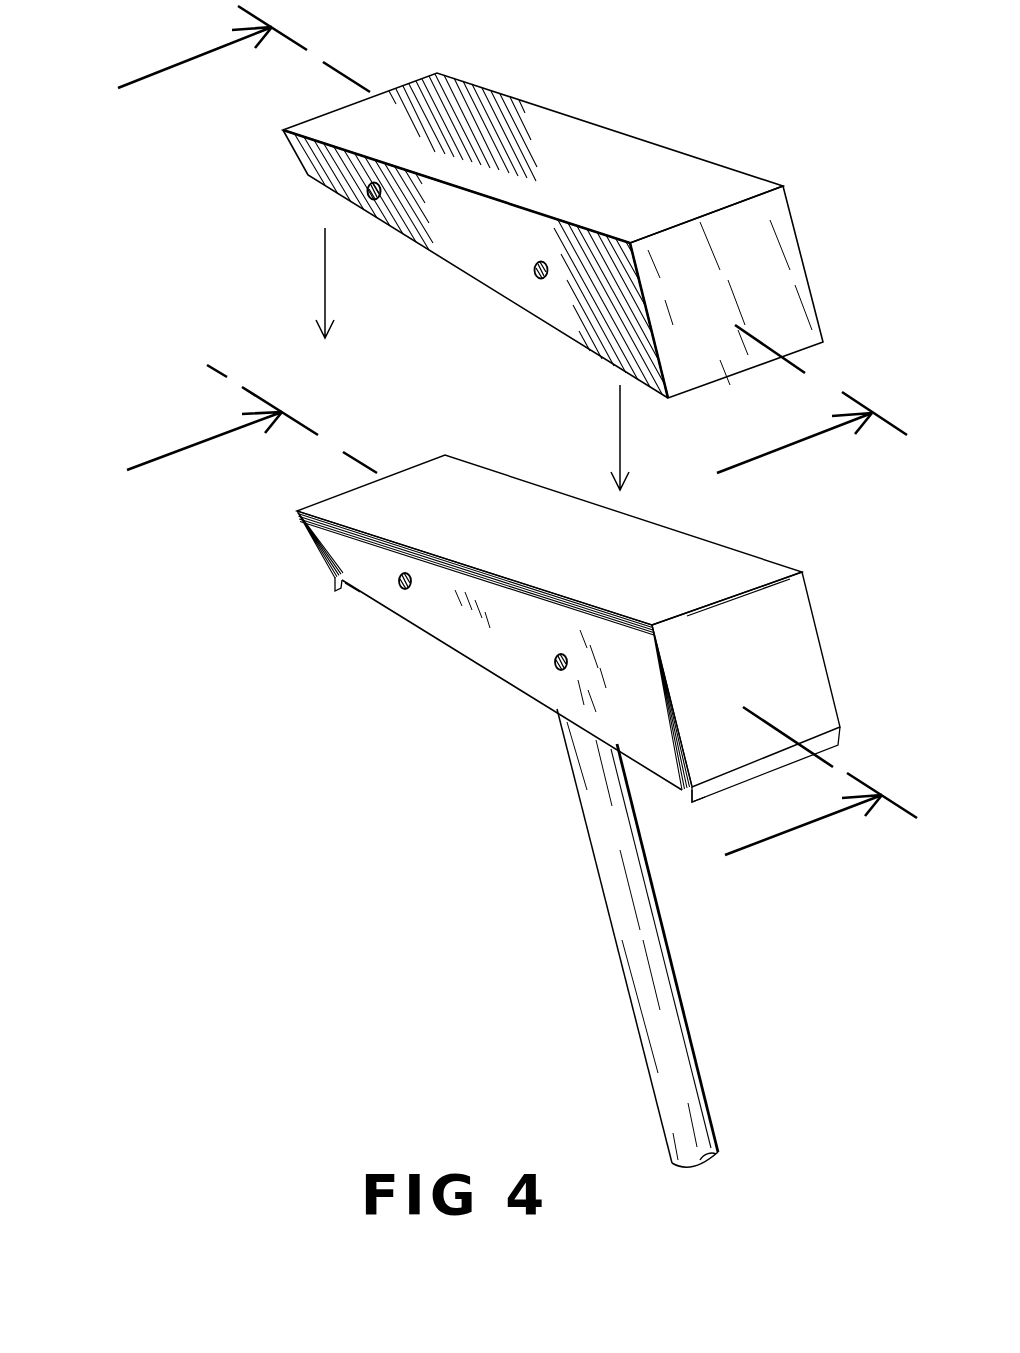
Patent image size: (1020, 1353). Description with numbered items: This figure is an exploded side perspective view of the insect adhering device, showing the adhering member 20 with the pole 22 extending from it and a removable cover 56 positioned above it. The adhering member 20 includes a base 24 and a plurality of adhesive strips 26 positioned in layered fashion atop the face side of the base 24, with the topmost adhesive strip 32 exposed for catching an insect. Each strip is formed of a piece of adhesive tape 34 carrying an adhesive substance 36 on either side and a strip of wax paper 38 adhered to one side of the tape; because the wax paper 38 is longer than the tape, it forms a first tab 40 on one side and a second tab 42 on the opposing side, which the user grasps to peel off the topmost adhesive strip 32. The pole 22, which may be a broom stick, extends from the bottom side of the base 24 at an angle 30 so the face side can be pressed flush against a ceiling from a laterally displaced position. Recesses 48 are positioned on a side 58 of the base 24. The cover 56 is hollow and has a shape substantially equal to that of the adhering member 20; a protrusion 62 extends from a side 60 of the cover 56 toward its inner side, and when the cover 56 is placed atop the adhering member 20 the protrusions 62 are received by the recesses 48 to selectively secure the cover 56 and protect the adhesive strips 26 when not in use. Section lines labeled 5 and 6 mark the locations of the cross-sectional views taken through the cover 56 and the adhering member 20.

The section line 5- 5 is at (496, 254).
The section line 6- 6 is at (509, 626).
The adhering member 20 is at (553, 791).
The pole 22 is at (635, 938).
The base 24 is at (472, 676).
The plurality of adhesive strips 26 is at (518, 592).
The angle 30 is at (633, 798).
The topmost adhesive strip 32 is at (494, 497).
The adhesive tape 34 is at (765, 579).
The adhesive substance 36 is at (717, 571).
The wax paper 38 is at (688, 794).
The first tab 40 is at (333, 580).
The second tab 42 is at (803, 756).
The recesses 48 is at (420, 651).
The cover 56 is at (553, 232).
The side of the base 58 is at (372, 563).
The side of the cover 60 is at (507, 280).
The protrusion 62 is at (376, 201).